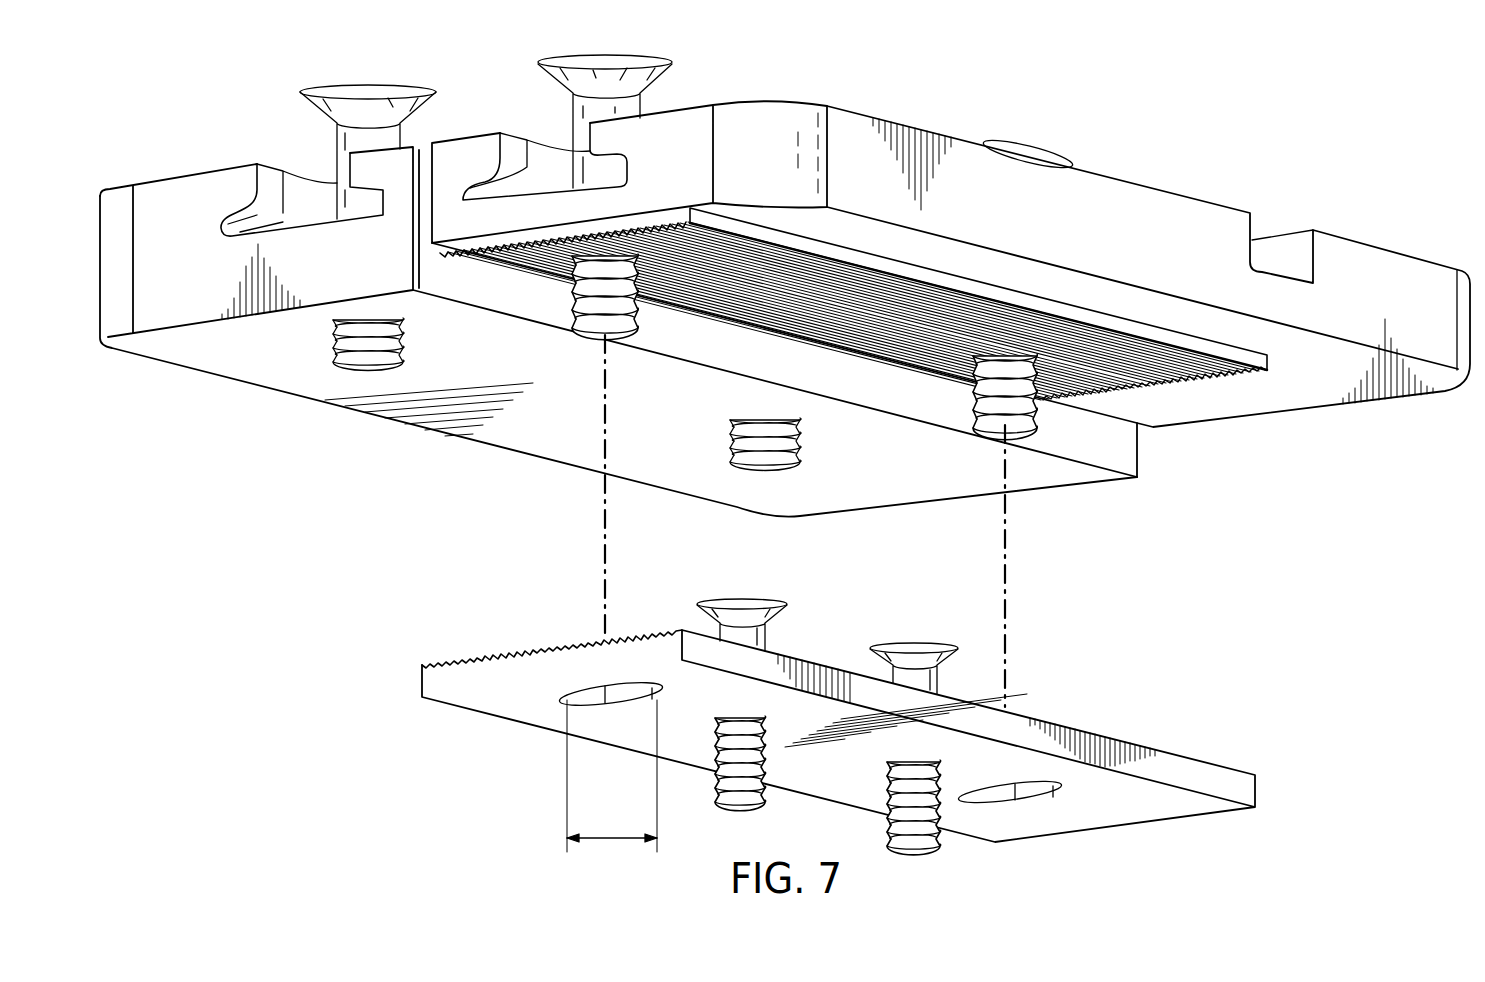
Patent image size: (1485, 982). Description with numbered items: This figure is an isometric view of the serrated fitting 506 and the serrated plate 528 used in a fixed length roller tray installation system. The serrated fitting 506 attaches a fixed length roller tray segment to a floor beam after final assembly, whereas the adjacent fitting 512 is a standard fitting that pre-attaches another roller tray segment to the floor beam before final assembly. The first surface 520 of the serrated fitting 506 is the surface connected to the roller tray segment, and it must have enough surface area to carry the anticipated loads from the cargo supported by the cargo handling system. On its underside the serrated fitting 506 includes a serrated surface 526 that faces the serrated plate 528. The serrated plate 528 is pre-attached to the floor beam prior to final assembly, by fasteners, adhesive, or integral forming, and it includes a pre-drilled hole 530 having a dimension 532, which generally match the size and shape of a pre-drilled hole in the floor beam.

The serrated fitting 506 is at (1157, 200).
The fitting 512 is at (182, 188).
The first surface 520 is at (701, 103).
The serrated surface 526 is at (711, 318).
The serrated plate 528 is at (1115, 815).
The pre-drilled hole 530 is at (600, 700).
The dimension 532 is at (612, 840).